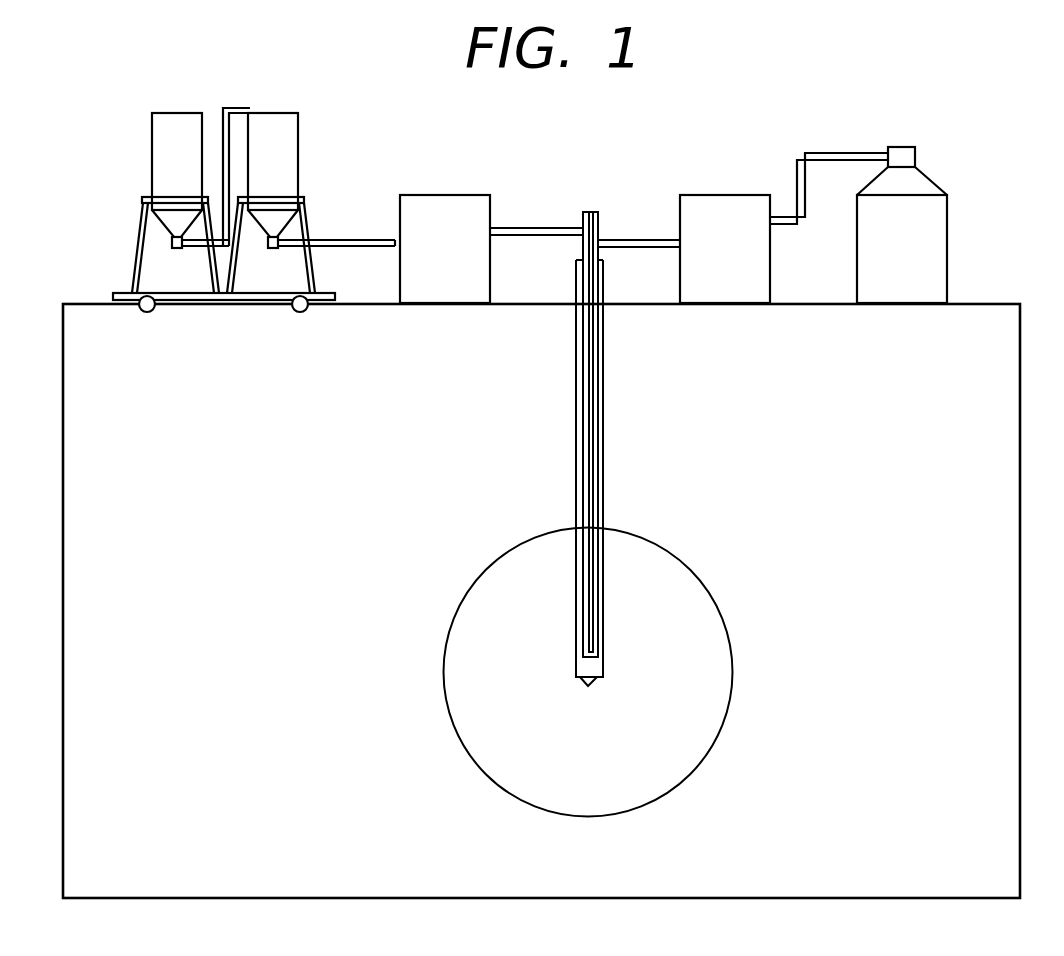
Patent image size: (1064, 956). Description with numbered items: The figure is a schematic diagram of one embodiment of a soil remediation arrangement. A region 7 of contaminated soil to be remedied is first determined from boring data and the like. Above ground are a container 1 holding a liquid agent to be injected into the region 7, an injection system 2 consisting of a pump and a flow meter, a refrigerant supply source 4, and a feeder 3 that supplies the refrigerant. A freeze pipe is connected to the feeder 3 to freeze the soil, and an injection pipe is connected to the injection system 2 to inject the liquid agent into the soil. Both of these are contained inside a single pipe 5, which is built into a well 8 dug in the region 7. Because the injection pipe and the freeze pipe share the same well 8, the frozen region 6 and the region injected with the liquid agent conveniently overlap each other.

The container 1 is at (290, 142).
The injection system 2 is at (460, 210).
The feeder 3 is at (740, 210).
The refrigerant supply source 4 is at (938, 228).
The pipe 5 is at (591, 212).
The frozen region 6 is at (490, 673).
The region of contaminated soil 7 is at (541, 601).
The well 8 is at (597, 458).